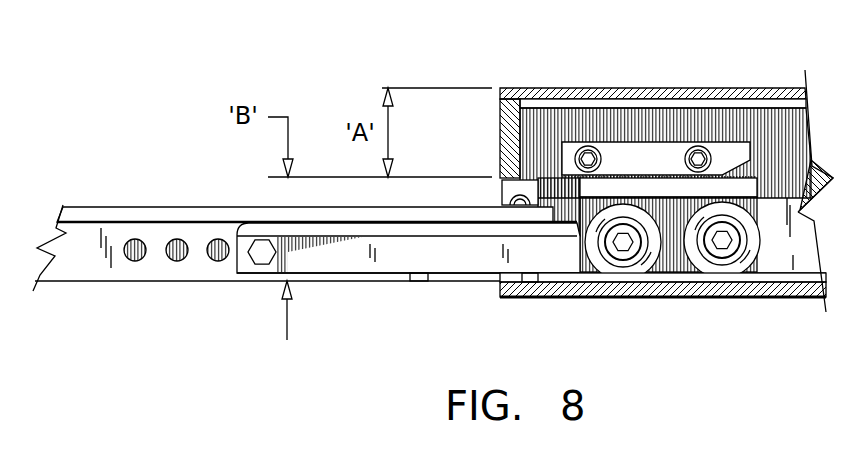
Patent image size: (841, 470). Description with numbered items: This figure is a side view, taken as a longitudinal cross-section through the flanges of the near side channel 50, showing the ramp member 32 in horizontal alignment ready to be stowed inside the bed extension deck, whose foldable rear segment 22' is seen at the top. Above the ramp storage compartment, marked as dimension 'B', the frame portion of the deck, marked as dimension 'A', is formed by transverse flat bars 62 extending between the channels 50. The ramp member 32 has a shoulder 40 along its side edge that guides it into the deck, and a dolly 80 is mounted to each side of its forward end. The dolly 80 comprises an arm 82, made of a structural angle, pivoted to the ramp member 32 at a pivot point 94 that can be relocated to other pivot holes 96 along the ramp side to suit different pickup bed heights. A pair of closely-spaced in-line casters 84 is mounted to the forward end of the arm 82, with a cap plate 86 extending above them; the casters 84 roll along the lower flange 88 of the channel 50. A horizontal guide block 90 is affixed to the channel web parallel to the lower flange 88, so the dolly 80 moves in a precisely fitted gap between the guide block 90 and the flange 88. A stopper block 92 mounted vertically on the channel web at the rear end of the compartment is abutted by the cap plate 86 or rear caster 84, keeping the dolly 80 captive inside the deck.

The foldable rear segment 22' is at (666, 114).
The ramp member 32 is at (155, 205).
The shoulder 40 is at (80, 223).
The channel 50 is at (800, 260).
The transverse flat bar 62 is at (500, 117).
The dolly 80 is at (404, 307).
The arm 82 is at (348, 252).
The caster 84 is at (702, 265).
The cap plate 86 is at (638, 187).
The lower flange 88 is at (778, 298).
The horizontal guide block 90 is at (625, 148).
The stopper block 92 is at (500, 192).
The pivot point 94 is at (268, 255).
The pivot hole 96 is at (172, 262).